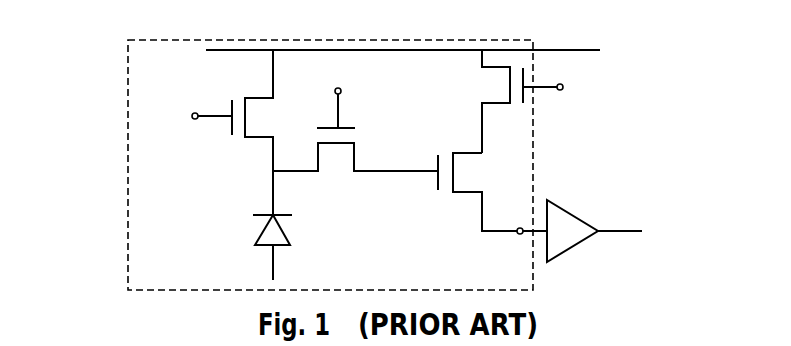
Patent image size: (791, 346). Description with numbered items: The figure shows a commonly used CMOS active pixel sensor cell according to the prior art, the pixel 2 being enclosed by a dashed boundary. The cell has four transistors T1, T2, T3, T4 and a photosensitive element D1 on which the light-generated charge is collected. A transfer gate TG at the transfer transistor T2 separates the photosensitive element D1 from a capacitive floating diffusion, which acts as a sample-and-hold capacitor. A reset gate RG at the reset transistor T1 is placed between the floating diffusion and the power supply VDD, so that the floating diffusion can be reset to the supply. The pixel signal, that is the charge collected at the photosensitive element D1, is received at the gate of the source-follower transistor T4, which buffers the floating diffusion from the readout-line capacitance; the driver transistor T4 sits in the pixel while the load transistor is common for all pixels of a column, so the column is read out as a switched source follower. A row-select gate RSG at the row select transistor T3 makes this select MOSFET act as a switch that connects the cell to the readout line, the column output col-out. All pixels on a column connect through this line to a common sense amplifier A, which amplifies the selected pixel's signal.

The pixel 2 is at (128, 212).
The reset transistor T1 is at (249, 132).
The transfer transistor T2 is at (355, 162).
The row select transistor T3 is at (507, 101).
The source-follower transistor T4 is at (492, 193).
The photosensitive element D1 is at (296, 247).
The reset gate RG is at (159, 115).
The transfer gate TG is at (338, 93).
The row-select gate RSG is at (596, 87).
The power supply VDD is at (432, 49).
The sense amplifier A is at (594, 231).
The column output col-out is at (493, 259).